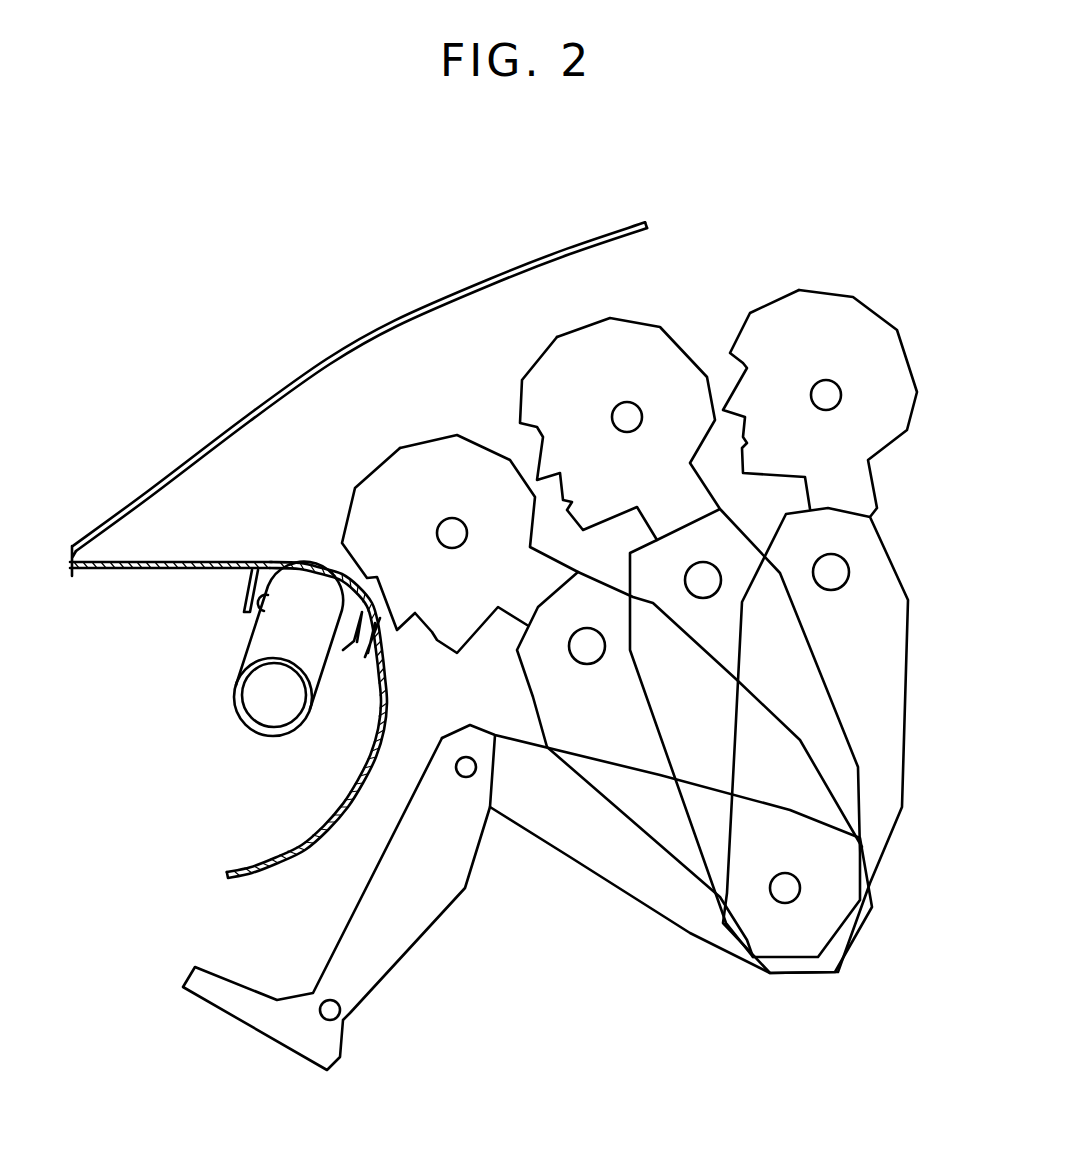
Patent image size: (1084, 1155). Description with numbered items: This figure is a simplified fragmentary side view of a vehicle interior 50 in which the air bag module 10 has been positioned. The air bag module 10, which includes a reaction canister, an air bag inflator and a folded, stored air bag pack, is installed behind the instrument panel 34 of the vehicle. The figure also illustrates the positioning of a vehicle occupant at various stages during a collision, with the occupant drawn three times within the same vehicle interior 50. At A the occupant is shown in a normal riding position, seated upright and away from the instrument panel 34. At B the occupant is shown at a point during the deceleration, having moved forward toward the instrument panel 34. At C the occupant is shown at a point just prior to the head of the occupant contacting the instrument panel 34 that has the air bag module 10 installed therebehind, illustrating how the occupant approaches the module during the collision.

The air bag module 10 is at (266, 690).
The instrument panel 34 is at (279, 556).
The vehicle interior 50 is at (720, 268).
The normal riding position A is at (860, 330).
The position during deceleration B is at (618, 342).
The position just prior to head contacting instrument panel C is at (430, 463).